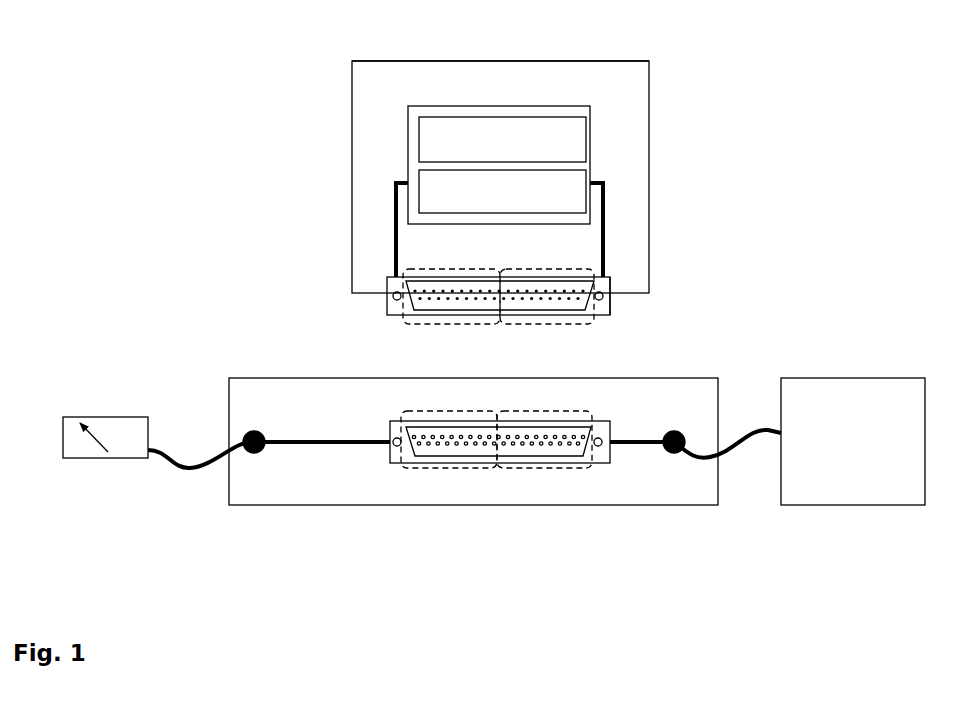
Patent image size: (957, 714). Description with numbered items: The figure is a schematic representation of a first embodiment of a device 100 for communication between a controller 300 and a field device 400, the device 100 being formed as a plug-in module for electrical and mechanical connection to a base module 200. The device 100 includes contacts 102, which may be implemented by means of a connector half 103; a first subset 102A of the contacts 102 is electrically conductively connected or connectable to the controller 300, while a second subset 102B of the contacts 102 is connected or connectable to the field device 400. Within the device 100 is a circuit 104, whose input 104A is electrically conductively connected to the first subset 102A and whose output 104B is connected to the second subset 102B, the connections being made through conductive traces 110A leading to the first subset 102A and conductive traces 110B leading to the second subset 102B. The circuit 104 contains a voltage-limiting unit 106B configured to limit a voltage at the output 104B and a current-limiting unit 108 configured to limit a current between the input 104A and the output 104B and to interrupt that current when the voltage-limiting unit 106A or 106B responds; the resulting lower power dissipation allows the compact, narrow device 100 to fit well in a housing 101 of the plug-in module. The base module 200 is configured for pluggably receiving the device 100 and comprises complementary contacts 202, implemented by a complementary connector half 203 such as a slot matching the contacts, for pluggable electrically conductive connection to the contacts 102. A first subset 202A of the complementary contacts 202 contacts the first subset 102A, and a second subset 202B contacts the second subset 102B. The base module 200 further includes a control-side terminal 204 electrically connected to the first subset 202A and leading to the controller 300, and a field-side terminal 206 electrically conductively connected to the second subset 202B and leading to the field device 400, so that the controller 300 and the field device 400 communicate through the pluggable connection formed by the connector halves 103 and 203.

The device 100 is at (384, 56).
The housing 101 is at (574, 60).
The circuit 104 is at (580, 112).
The other voltage-limiting unit 106A is at (612, 113).
The voltage-limiting unit 106B is at (577, 128).
The current-limiting unit 108 is at (577, 175).
The input of the circuit 104A is at (591, 181).
The output of the circuit 104B is at (406, 182).
The conductive traces to the first subset of contacts 110A is at (605, 227).
The conductive traces to the second subset of contacts 110B is at (394, 230).
The contacts 102 is at (361, 302).
The first subset of contacts 102A is at (581, 327).
The second subset of contacts 102B is at (455, 326).
The connector half 103 is at (612, 305).
The base module 200 is at (260, 370).
The complementary contacts 202 is at (469, 466).
The first subset of complementary contacts 202A is at (545, 470).
The second subset of complementary contacts 202B is at (435, 470).
The complementary connector half 203 is at (400, 421).
The control-side terminal 204 is at (678, 433).
The field-side terminal 206 is at (238, 434).
The controller 300 is at (827, 505).
The field device 400 is at (115, 417).